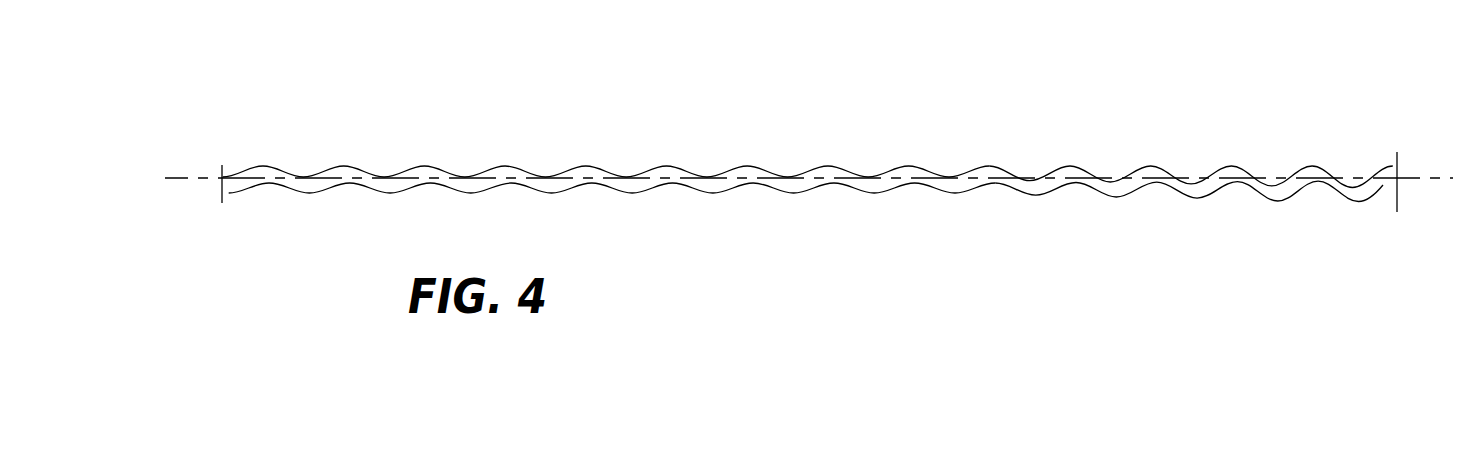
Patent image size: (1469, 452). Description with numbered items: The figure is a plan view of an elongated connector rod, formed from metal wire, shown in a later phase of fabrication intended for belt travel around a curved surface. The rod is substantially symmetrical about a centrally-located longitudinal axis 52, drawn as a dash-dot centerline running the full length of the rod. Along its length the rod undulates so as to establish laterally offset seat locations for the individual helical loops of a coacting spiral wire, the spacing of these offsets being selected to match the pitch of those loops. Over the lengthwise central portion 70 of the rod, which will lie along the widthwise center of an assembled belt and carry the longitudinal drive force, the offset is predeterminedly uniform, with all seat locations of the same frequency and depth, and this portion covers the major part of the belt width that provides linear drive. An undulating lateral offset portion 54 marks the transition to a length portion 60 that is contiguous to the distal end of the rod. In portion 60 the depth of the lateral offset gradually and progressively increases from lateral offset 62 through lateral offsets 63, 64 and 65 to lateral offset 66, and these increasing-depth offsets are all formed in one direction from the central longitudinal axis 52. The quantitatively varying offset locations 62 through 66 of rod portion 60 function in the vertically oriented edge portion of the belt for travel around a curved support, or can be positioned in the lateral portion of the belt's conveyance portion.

The central longitudinal axis 52 is at (1428, 178).
The undulating lateral offset portion 54 is at (993, 166).
The length portion of the connector rod 60 is at (993, 53).
The connector rod central portion 70 is at (222, 35).
The lateral offset 62 is at (1033, 195).
The lateral offset 63 is at (1113, 197).
The lateral offset 64 is at (1195, 198).
The lateral offset 65 is at (1275, 202).
The lateral offset 66 is at (1353, 203).